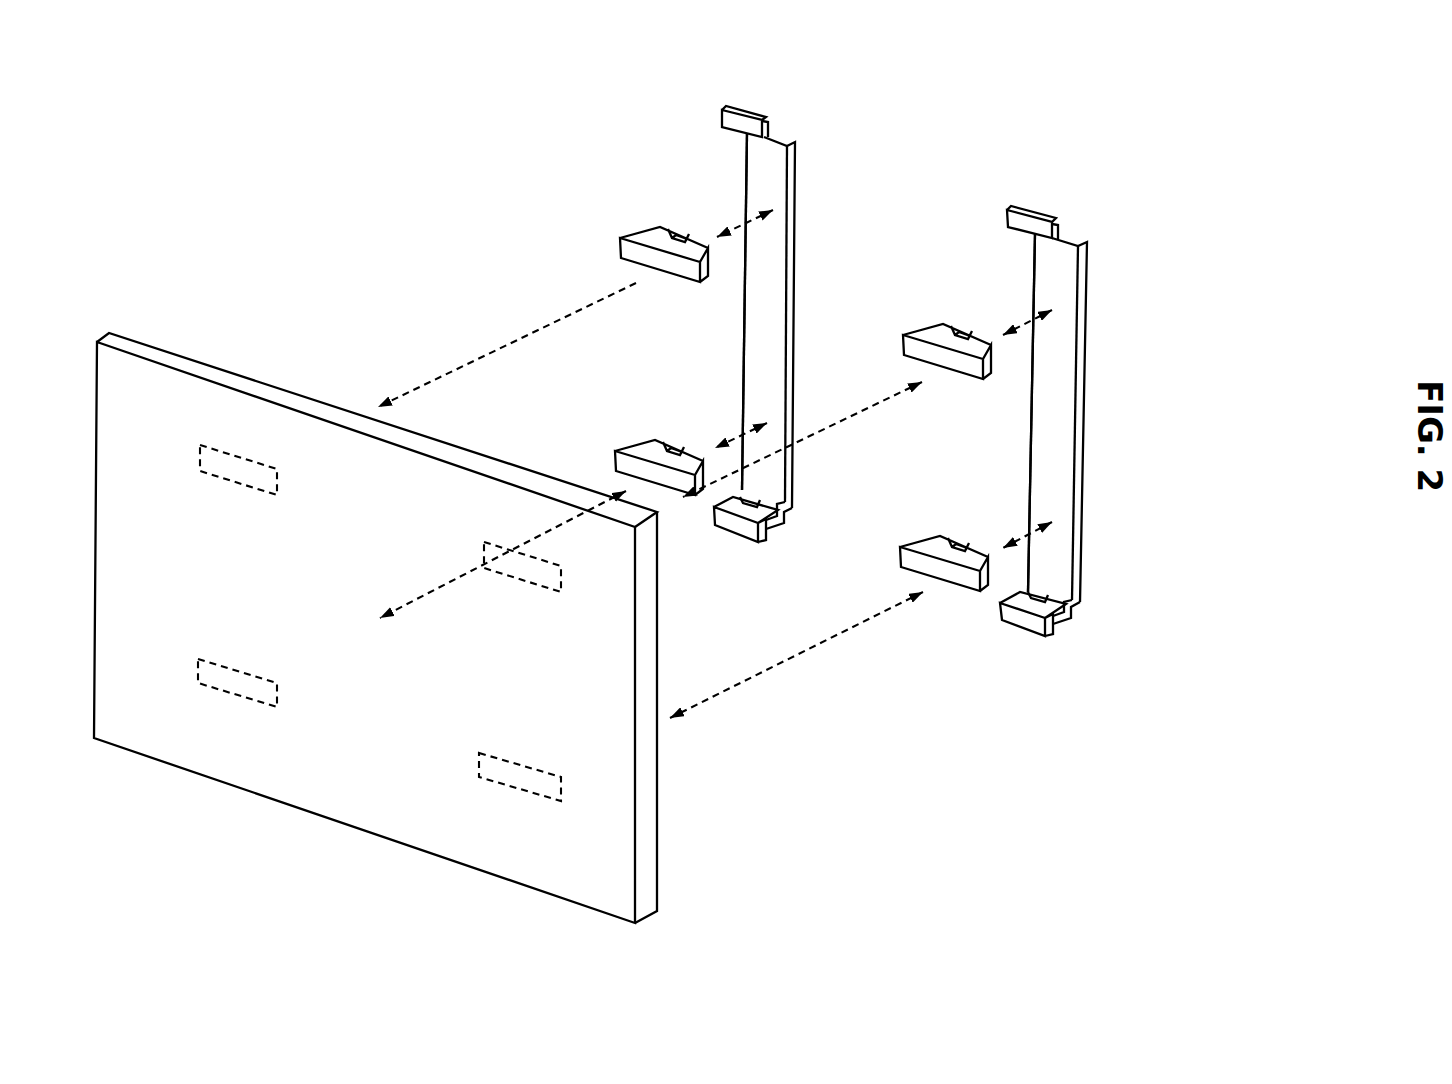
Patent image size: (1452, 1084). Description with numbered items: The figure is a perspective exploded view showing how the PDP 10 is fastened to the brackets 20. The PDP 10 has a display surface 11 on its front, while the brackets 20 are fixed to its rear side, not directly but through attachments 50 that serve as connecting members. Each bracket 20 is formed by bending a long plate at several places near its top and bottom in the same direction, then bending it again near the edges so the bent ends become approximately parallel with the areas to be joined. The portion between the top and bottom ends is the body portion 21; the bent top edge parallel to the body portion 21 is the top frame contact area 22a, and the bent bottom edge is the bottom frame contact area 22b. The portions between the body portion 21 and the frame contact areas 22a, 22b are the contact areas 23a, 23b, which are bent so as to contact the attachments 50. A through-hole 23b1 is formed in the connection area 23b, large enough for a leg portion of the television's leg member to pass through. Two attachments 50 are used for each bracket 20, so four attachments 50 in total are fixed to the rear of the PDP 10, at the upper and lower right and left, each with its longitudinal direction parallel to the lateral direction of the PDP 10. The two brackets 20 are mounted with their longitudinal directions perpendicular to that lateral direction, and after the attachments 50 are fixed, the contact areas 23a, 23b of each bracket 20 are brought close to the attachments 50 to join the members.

The PDP 10 is at (652, 815).
The display surface 11 is at (277, 765).
The bracket 20 is at (793, 206).
The body portion 21 is at (770, 277).
The top frame contact area 22a is at (722, 120).
The bottom frame contact area 22b is at (743, 544).
The contact area 23a is at (783, 140).
The contact area 23b is at (775, 535).
The through-hole 23b1 is at (760, 500).
The attachment 50 is at (621, 237).